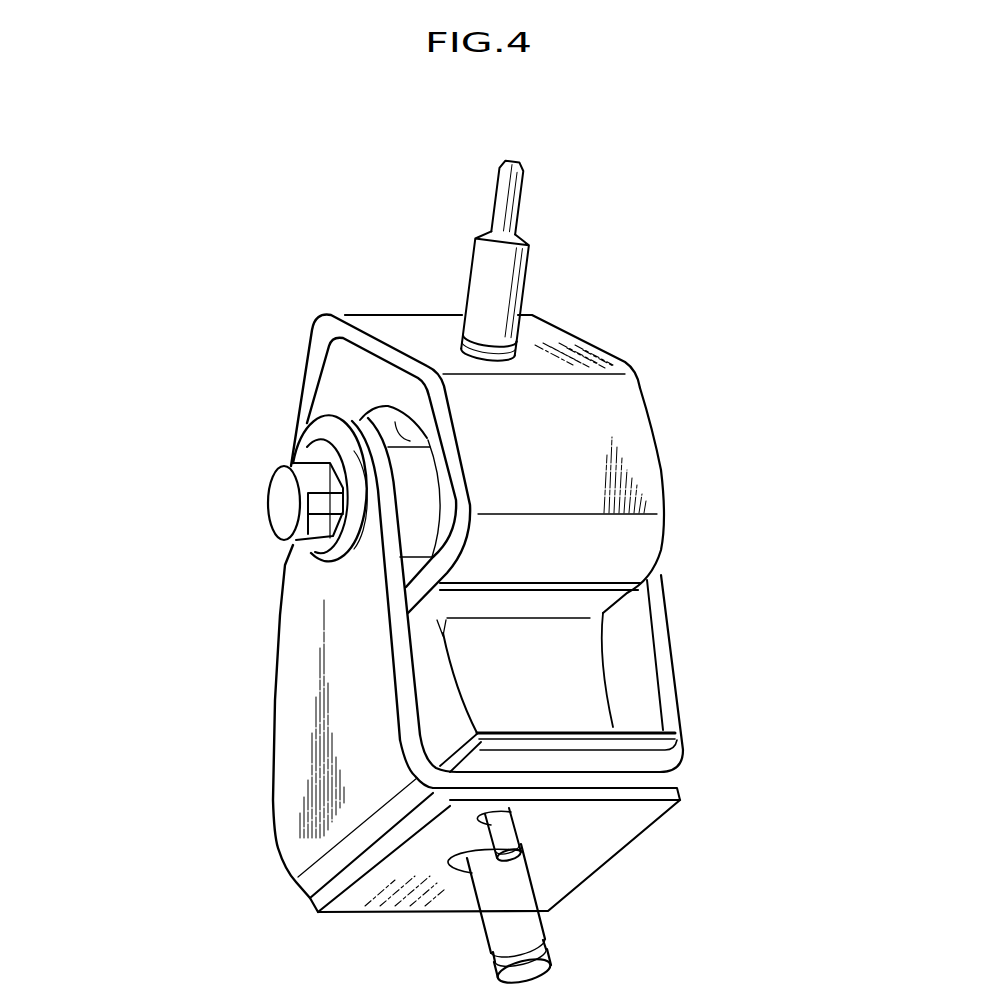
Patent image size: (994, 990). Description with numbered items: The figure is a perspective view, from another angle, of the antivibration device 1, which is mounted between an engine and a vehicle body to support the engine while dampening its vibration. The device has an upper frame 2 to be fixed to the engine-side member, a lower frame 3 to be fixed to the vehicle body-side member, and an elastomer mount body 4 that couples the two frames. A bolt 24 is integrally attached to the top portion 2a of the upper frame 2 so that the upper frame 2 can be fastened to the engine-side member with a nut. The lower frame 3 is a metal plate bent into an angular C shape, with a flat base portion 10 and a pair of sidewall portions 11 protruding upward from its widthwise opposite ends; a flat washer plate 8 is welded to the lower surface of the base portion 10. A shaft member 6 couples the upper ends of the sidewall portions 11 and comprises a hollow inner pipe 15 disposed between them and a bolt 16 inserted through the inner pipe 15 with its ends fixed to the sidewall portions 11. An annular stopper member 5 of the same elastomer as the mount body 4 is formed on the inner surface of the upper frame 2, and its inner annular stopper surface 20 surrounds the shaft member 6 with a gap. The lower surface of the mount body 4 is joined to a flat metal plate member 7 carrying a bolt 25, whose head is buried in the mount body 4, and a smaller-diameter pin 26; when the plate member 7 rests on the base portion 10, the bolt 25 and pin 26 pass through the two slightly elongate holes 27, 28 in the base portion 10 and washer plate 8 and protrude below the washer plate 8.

The antivibration device 1 is at (738, 508).
The upper frame 2 is at (648, 414).
The top portion of the upper frame 2a is at (410, 336).
The lower frame 3 is at (271, 741).
The mount body 4 is at (588, 674).
The stopper member 5 is at (355, 380).
The shaft member 6 is at (268, 466).
The plate member 7 is at (656, 739).
The washer plate 8 is at (373, 893).
The base portion 10 is at (613, 780).
The sidewall portions 11 is at (297, 652).
The inner pipe 15 is at (428, 488).
The bolt 16 is at (282, 503).
The annular stopper surface 20 is at (425, 437).
The bolt 24 is at (507, 278).
The bolt 25 is at (526, 898).
The pin 26 is at (526, 832).
The hole 27 is at (463, 878).
The hole 28 is at (486, 812).